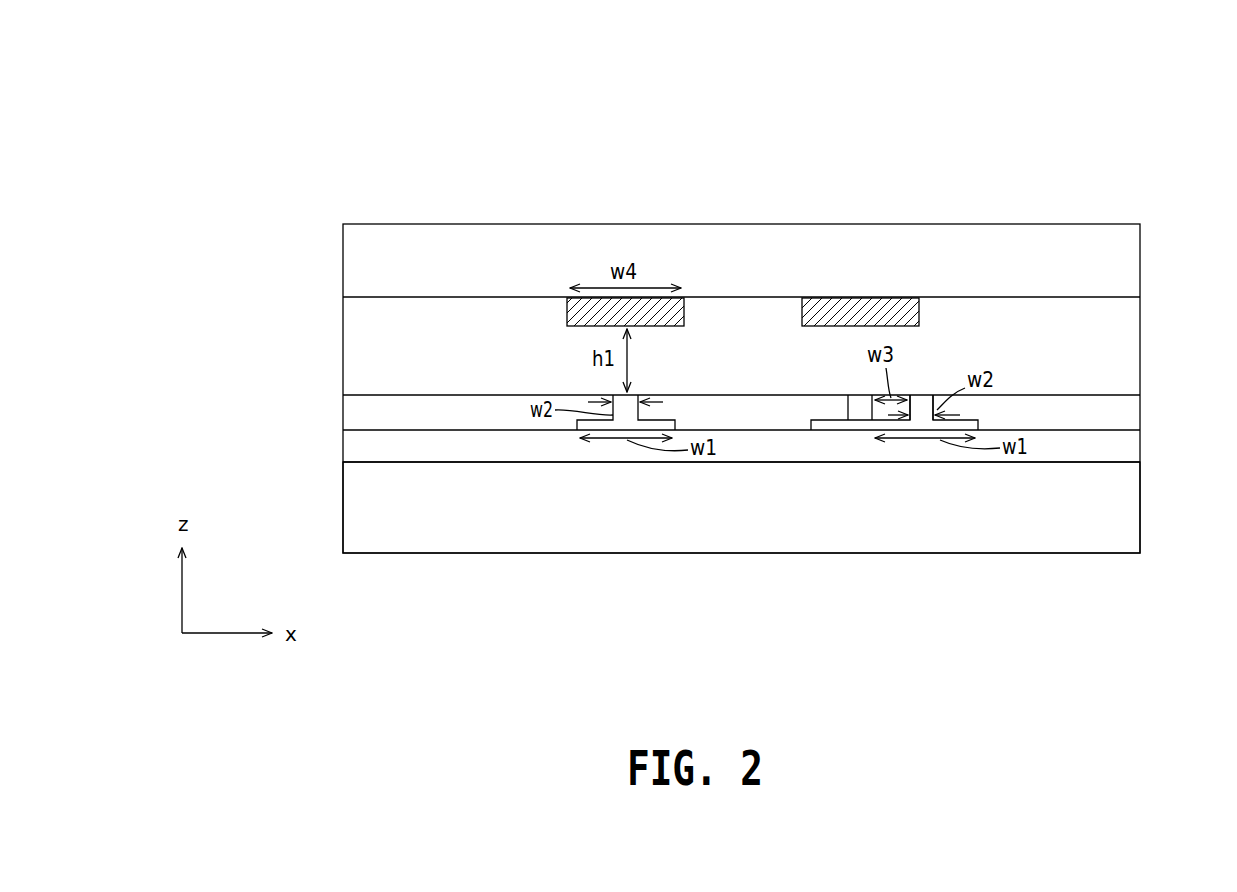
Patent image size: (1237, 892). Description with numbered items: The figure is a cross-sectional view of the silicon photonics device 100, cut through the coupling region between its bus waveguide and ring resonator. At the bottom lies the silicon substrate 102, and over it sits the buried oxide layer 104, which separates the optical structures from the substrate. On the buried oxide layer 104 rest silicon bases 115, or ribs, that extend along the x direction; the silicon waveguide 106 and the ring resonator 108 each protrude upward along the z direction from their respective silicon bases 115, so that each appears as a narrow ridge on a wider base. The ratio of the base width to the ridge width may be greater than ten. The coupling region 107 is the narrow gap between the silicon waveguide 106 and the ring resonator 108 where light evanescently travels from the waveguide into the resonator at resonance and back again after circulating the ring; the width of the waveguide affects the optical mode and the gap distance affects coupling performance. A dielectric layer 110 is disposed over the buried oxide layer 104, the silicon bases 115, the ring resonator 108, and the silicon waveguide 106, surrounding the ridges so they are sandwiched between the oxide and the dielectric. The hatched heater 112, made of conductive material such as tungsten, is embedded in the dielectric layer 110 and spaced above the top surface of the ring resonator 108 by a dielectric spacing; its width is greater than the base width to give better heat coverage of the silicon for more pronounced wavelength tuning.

The silicon photonics device 100 is at (303, 155).
The silicon substrate 102 is at (1120, 493).
The buried oxide layer 104 is at (1120, 443).
The silicon waveguide 106 is at (923, 410).
The coupling region 107 is at (918, 376).
The ring resonator 108 is at (851, 404).
The dielectric layer 110 is at (320, 223).
The heater 112 is at (807, 310).
The silicon base 115 is at (675, 422).